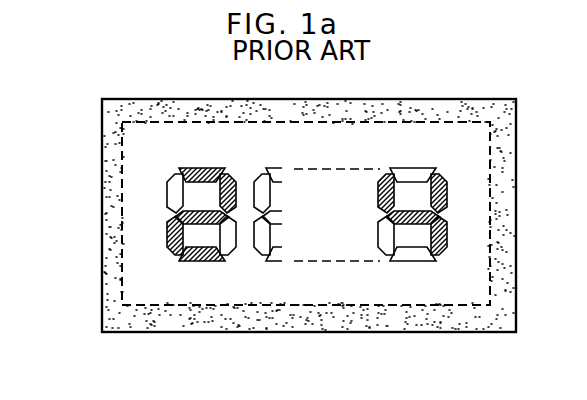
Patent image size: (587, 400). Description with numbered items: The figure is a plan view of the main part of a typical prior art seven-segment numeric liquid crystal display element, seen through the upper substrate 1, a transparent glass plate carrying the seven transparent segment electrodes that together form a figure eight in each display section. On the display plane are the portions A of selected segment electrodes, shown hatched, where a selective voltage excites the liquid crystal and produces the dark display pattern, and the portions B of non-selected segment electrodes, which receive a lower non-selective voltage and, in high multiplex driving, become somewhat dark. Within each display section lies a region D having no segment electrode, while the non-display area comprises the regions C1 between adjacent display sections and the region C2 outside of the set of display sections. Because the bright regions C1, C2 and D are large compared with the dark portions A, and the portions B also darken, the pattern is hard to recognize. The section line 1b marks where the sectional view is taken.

The upper substrate 1 is at (516, 148).
The portions of selected segment electrodes A is at (182, 171).
The region having no segment electrode D is at (192, 189).
The portions of non-selected segment electrodes B is at (177, 197).
The region between adjacent display sections C1 is at (242, 250).
The region outside the set of display sections C2 is at (138, 267).
The section line Ib—Ib 1b is at (434, 353).